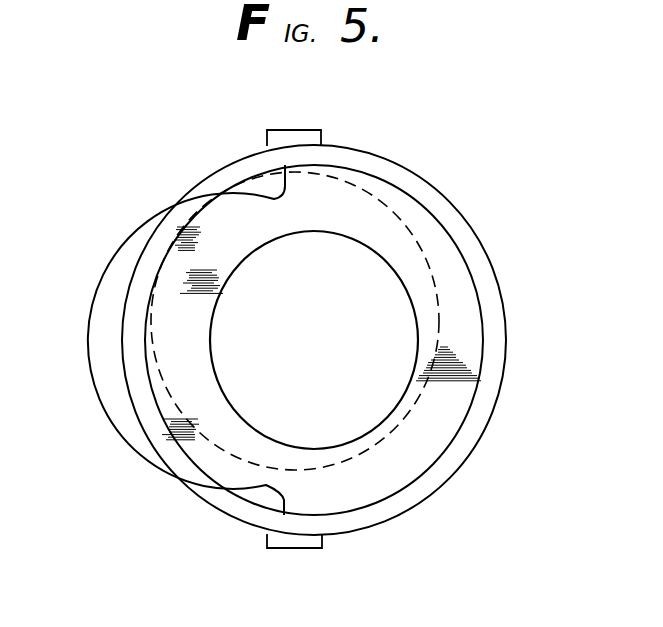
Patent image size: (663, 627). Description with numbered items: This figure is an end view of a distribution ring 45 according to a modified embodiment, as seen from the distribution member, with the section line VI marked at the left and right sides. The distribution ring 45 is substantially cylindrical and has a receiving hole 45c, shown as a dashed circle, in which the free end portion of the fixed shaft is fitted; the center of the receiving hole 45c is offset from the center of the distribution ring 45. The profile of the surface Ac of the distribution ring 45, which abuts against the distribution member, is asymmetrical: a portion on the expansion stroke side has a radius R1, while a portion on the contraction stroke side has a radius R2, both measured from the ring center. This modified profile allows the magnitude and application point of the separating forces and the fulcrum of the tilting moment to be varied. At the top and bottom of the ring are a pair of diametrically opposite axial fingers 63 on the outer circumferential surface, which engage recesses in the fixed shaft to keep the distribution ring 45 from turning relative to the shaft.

The distribution ring 45 is at (483, 249).
The receiving hole 45c is at (374, 200).
The axial fingers 63 is at (283, 130).
The surface Ac is at (445, 400).
The radius R1 is at (313, 341).
The radius R2 is at (462, 258).
The section line VI- VI is at (112, 343).